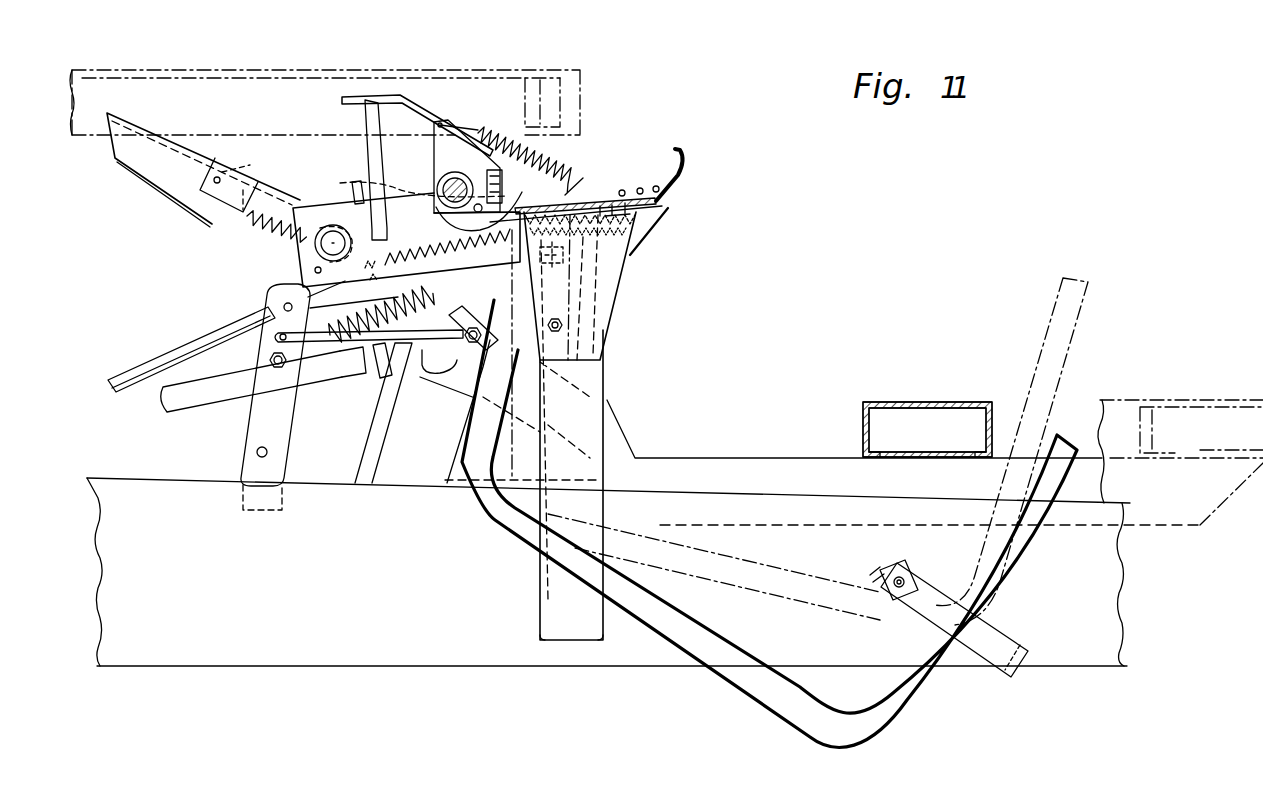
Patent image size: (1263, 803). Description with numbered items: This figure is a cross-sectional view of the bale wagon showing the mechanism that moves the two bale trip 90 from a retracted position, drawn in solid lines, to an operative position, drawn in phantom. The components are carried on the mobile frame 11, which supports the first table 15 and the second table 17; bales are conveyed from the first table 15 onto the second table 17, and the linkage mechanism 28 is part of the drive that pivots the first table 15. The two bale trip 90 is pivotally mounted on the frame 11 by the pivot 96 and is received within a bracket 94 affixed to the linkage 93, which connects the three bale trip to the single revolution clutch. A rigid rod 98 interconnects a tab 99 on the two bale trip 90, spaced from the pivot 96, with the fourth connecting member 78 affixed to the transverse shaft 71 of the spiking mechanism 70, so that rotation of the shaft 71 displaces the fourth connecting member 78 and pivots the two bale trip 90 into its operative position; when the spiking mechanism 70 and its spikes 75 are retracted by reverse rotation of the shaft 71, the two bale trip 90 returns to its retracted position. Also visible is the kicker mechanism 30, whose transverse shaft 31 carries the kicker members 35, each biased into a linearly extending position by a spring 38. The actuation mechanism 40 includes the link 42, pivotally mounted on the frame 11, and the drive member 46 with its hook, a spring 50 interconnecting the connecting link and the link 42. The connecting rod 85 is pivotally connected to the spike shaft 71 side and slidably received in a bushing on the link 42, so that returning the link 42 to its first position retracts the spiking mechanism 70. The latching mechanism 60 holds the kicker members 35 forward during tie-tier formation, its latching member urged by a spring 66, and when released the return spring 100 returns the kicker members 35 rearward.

The mobile frame 11 is at (495, 661).
The first table 15 is at (925, 400).
The second table 17 is at (342, 68).
The linkage mechanism 28 is at (160, 402).
The kicker mechanism 30 is at (128, 214).
The transverse shaft 31 is at (302, 252).
The kicker members 35 is at (215, 208).
The spring 38 is at (262, 232).
The actuation mechanism 40 is at (303, 504).
The link 42 is at (243, 420).
The drive member 46 is at (372, 428).
The spring 50 is at (270, 305).
The latching mechanism 60 is at (458, 102).
The spring 66 is at (483, 127).
The spiking mechanism 70 is at (400, 93).
The transverse shaft 71 is at (437, 185).
The spikes 75 is at (365, 163).
The fourth connecting member 78 is at (575, 172).
The connecting rod 85 is at (165, 358).
The two bale trip 90 is at (1075, 340).
The linkage 93 is at (900, 565).
The bracket 94 is at (1008, 635).
The pivot 96 is at (562, 325).
The rigid rod 98 is at (585, 190).
The tab 99 is at (600, 280).
The return spring 100 is at (352, 184).